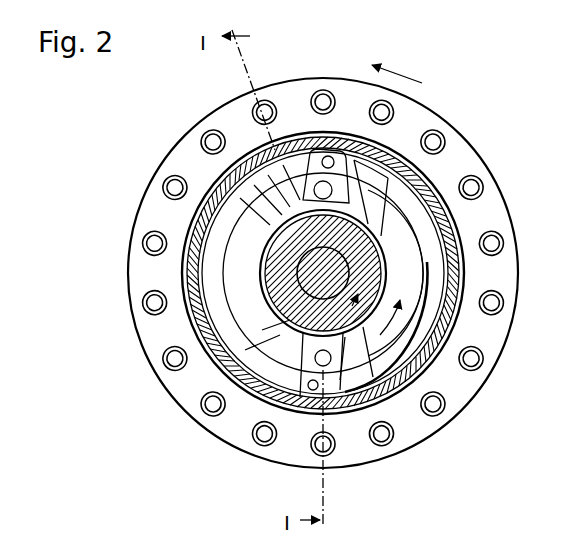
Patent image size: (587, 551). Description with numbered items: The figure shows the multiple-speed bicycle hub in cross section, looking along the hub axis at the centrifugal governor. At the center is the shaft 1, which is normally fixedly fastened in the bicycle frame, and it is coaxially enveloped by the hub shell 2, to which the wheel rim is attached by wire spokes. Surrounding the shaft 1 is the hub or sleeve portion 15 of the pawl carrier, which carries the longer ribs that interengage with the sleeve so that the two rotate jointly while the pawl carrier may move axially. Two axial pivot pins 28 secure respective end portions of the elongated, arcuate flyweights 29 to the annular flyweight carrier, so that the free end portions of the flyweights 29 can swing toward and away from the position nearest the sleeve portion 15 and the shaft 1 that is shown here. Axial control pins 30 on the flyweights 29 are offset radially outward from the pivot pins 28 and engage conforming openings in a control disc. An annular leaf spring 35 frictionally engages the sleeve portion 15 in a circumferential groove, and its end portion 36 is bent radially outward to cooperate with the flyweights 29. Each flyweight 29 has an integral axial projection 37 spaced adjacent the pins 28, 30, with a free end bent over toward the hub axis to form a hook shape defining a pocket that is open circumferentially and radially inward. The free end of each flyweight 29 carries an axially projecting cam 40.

The shaft 1 is at (300, 290).
The hub shell 2 is at (488, 342).
The hub or sleeve portion of the pawl carrier 15 is at (377, 245).
The axial pivot pin 28 is at (330, 370).
The flyweight 29 is at (396, 246).
The axial control pin 30 is at (313, 392).
The annular leaf spring 35 is at (257, 248).
The end portion of the spring 36 is at (285, 215).
The axial projection 37 is at (278, 365).
The cam 40 is at (293, 197).